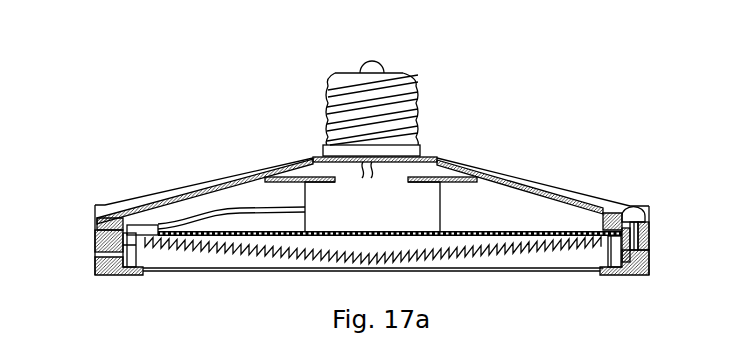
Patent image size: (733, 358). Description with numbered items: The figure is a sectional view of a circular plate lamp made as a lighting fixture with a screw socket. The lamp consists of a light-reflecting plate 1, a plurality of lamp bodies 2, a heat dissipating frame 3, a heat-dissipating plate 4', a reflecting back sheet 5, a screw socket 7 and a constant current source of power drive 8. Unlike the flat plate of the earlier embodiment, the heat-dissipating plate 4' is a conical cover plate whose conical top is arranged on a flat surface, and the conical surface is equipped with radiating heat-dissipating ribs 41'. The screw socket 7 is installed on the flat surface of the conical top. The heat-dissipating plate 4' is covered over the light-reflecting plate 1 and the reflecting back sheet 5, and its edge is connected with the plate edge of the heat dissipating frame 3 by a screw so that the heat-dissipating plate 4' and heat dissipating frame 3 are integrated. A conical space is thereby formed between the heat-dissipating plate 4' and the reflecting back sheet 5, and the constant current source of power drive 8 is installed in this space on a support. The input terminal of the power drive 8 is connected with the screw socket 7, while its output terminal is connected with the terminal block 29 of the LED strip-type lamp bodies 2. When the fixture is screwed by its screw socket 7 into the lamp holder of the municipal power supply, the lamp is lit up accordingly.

The screw socket 7 is at (377, 110).
The constant current source of power drive 8 is at (313, 200).
The reflecting back sheet 5 is at (180, 230).
The terminal block 29 is at (100, 221).
The heat-dissipating ribs 41' is at (527, 162).
The lamp bodies 2 is at (121, 273).
The light-reflecting plate 1 is at (563, 260).
The heat dissipating frame 3 is at (650, 273).
The heat-dissipating plate 4' is at (643, 223).